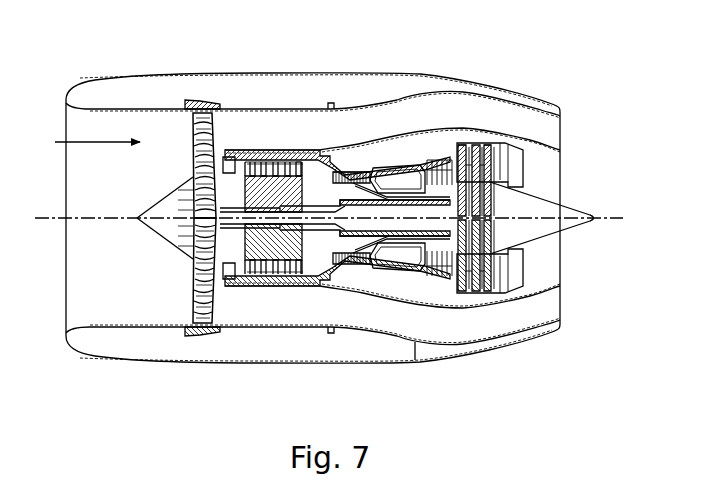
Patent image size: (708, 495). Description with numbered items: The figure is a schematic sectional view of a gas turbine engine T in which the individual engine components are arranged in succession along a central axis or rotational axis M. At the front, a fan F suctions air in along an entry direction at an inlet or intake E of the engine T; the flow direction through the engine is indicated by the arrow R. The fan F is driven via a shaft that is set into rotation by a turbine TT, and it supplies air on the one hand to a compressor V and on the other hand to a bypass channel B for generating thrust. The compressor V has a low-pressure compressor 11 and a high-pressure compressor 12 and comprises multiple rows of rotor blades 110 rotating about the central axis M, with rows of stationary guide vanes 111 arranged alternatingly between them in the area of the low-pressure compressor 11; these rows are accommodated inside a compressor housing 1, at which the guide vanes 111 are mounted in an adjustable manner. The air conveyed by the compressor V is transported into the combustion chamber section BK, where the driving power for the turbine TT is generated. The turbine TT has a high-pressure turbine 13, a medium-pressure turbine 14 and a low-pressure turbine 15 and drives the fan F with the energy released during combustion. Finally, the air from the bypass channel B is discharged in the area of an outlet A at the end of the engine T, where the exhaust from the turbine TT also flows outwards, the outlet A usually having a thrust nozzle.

The gas turbine engine T is at (544, 49).
The inlet E is at (88, 285).
The flow direction R is at (97, 133).
The fan F is at (193, 130).
The compressor housing 1 is at (242, 143).
The rotor blades 110 is at (252, 284).
The low-pressure compressor 11 is at (270, 163).
The guide vanes 111 is at (300, 163).
The high-pressure compressor 12 is at (342, 171).
The bypass channel B is at (393, 120).
The high-pressure turbine 13 is at (425, 160).
The medium-pressure turbine 14 is at (462, 148).
The low-pressure turbine 15 is at (488, 148).
The compressor V is at (290, 316).
The combustion chamber section BK is at (396, 286).
The turbine TT is at (455, 326).
The outlet A is at (547, 165).
The central axis M is at (618, 227).